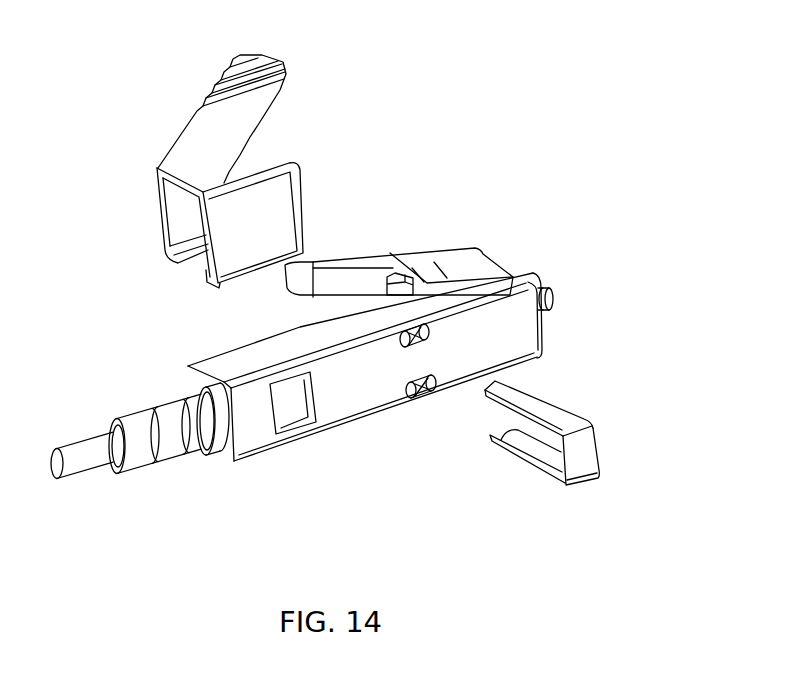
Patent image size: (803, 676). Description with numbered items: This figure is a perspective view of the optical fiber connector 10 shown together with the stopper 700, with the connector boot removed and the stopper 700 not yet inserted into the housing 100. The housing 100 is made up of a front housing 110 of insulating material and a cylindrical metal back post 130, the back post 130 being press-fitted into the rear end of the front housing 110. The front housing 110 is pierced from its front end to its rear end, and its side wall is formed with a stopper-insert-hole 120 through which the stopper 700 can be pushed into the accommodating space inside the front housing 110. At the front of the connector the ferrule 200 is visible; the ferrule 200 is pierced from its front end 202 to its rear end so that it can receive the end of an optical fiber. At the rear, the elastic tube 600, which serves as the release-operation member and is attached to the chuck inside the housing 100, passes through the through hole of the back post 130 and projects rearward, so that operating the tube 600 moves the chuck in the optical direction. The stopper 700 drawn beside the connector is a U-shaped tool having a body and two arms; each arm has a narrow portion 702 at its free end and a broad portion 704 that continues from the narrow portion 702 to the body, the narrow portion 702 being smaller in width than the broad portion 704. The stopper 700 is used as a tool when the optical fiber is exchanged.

The optical fiber connector 10 is at (409, 88).
The housing 100 is at (325, 414).
The front housing 110 is at (328, 418).
The stopper-insert-hole 120 is at (413, 400).
The back post 130 is at (172, 447).
The ferrule 200 is at (401, 182).
The front end 202 is at (553, 292).
The tube 600 is at (81, 470).
The stopper 700 is at (581, 415).
The narrow portion 702 is at (538, 373).
The broad portion 704 is at (556, 410).